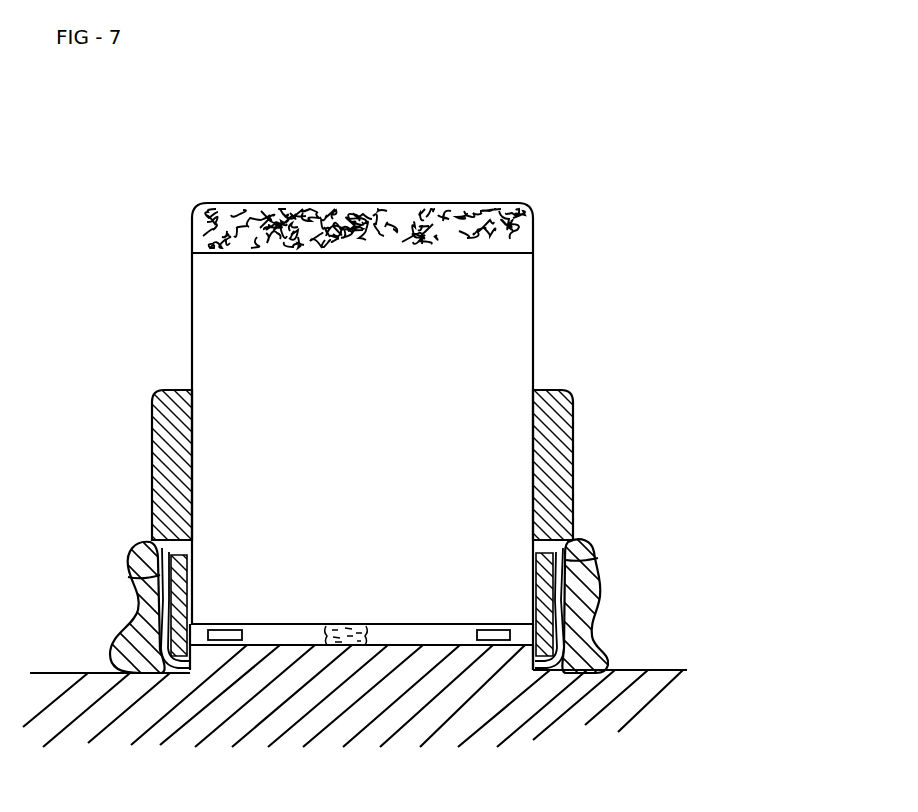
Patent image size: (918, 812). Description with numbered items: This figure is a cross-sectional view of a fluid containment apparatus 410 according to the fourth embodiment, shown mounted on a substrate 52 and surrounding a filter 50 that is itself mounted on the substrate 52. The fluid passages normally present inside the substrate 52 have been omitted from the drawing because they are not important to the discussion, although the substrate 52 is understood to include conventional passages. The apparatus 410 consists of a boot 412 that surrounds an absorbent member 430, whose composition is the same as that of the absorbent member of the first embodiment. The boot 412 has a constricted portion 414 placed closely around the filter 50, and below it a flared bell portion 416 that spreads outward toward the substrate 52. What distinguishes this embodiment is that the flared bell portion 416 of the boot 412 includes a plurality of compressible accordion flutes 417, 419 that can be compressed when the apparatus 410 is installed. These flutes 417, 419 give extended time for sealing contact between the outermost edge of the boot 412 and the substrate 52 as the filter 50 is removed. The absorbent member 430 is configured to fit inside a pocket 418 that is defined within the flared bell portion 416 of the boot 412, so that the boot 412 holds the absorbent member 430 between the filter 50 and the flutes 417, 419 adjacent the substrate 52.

The filter 50 is at (364, 445).
The substrate 52 is at (68, 668).
The fluid containment apparatus 410 is at (597, 490).
The boot 412 is at (141, 536).
The constricted portion 414 is at (150, 452).
The flared bell portion 416 is at (603, 615).
The compressible accordion flute 417 is at (593, 552).
The pocket 418 is at (130, 577).
The compressible accordion flute 419 is at (613, 644).
The absorbent member 430 is at (554, 556).